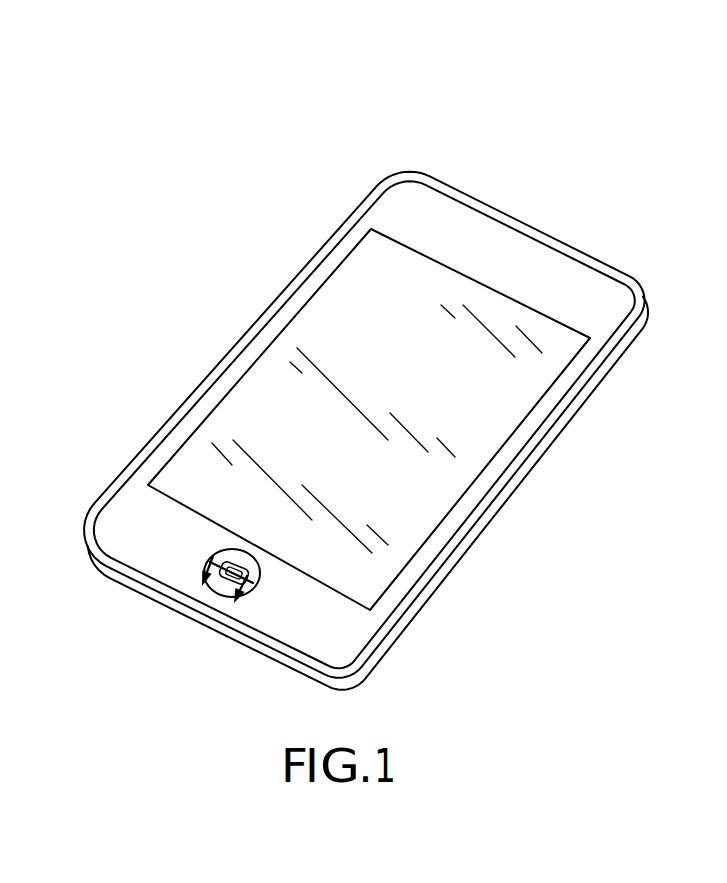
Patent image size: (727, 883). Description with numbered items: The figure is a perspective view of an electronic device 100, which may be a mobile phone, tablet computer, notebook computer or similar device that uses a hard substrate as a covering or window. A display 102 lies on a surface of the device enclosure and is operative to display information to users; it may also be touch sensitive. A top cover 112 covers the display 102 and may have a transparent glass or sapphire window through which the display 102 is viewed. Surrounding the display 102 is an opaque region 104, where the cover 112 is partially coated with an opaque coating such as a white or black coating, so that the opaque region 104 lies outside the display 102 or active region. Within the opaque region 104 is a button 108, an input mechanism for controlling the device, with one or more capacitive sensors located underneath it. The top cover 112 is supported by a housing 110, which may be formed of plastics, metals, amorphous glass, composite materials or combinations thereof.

The electronic device 100 is at (338, 105).
The display 102 is at (430, 508).
The opaque region 104 is at (152, 545).
The button 108 is at (227, 590).
The housing 110 is at (552, 443).
The top cover 112 is at (326, 304).